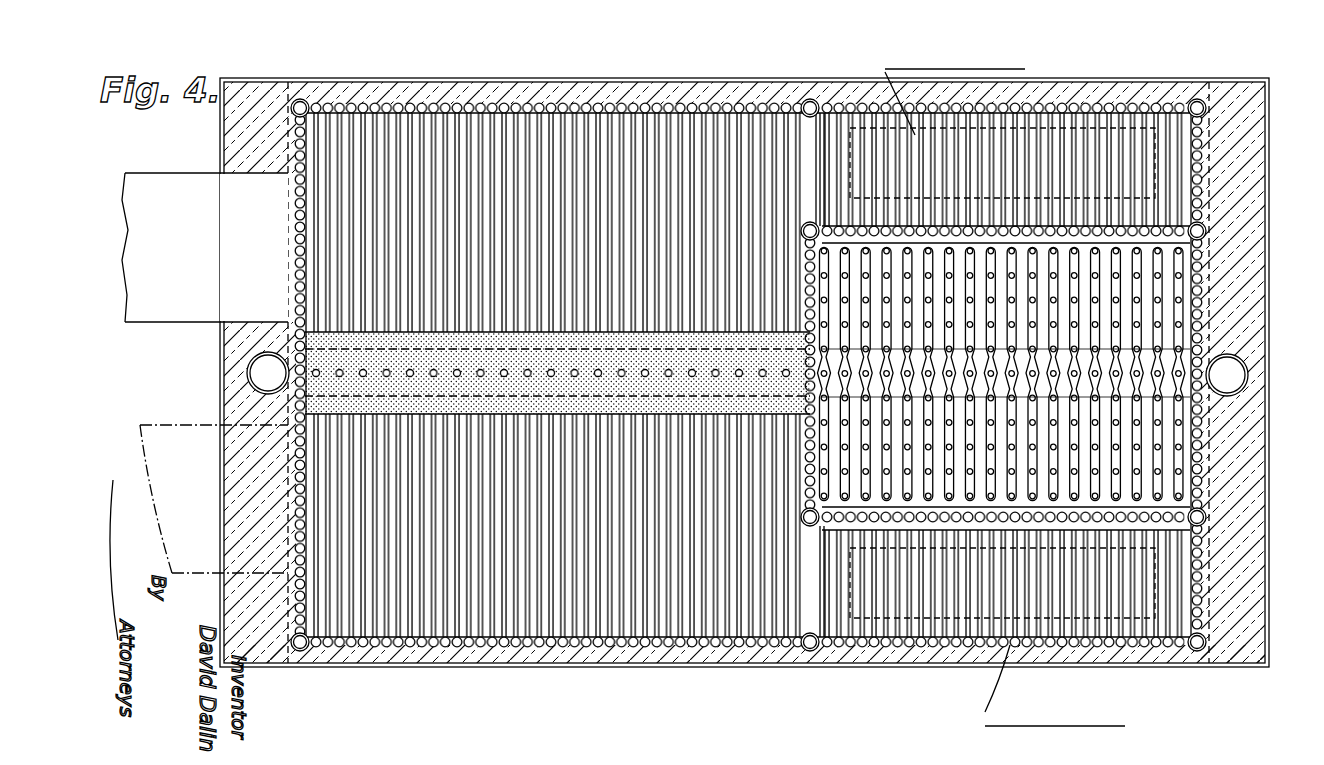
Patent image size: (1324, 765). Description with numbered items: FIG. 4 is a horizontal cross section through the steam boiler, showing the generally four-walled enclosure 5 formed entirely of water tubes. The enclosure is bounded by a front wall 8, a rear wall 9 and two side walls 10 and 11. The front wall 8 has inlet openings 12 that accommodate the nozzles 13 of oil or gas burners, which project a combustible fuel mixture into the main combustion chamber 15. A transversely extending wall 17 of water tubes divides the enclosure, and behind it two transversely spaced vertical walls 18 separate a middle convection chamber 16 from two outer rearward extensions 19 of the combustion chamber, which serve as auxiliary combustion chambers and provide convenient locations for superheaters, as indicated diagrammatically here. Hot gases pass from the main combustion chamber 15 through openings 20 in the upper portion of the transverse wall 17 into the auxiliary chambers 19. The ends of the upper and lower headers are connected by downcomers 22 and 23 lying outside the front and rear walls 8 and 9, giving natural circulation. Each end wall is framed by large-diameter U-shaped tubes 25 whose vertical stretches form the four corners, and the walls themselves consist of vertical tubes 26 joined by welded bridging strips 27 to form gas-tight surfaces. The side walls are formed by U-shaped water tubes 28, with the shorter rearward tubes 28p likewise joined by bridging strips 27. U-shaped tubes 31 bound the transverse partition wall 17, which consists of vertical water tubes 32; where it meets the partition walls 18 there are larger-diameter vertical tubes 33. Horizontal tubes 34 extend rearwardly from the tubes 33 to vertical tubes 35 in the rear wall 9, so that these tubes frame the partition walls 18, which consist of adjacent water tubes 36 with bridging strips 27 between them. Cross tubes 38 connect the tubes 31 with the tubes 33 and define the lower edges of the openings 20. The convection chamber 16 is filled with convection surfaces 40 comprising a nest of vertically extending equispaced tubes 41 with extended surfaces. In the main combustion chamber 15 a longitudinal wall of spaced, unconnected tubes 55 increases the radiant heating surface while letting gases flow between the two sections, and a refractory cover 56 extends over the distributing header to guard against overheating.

The enclosure 5 is at (443, 687).
The front wall 8 is at (295, 402).
The rear wall 9 is at (1204, 607).
The side wall 10 is at (557, 382).
The side wall 11 is at (640, 103).
The inlet opening 12 is at (230, 185).
The nozzle 13 is at (150, 220).
The combustion chamber 15 is at (515, 140).
The convection chamber 16 is at (1058, 374).
The transverse wall 17 is at (805, 248).
The vertical wall 18 is at (1173, 210).
The rearward extension of the combustion chamber 19 is at (1059, 382).
The opening 20 is at (805, 130).
The downcomer 22 is at (258, 376).
The downcomer 23 is at (1232, 376).
The U-shaped tube 25 is at (1205, 100).
The vertical tube 26 is at (298, 507).
The bridging strip 27 is at (580, 103).
The water tube 28 is at (683, 103).
The side wall-forming tube 28p is at (1068, 150).
The U-shaped tube 31 is at (818, 103).
The vertical water tube 32 is at (823, 620).
The vertically disposed tube 33 is at (822, 230).
The horizontally disposed tube 34 is at (1203, 252).
The vertical tube 35 is at (1206, 232).
The water tube 36 is at (1128, 215).
The cross tube 38 is at (806, 222).
The convection surface 40 is at (1178, 340).
The tube 41 is at (1160, 440).
The wall of tubes 55 is at (325, 345).
The refractory cover 56 is at (360, 355).